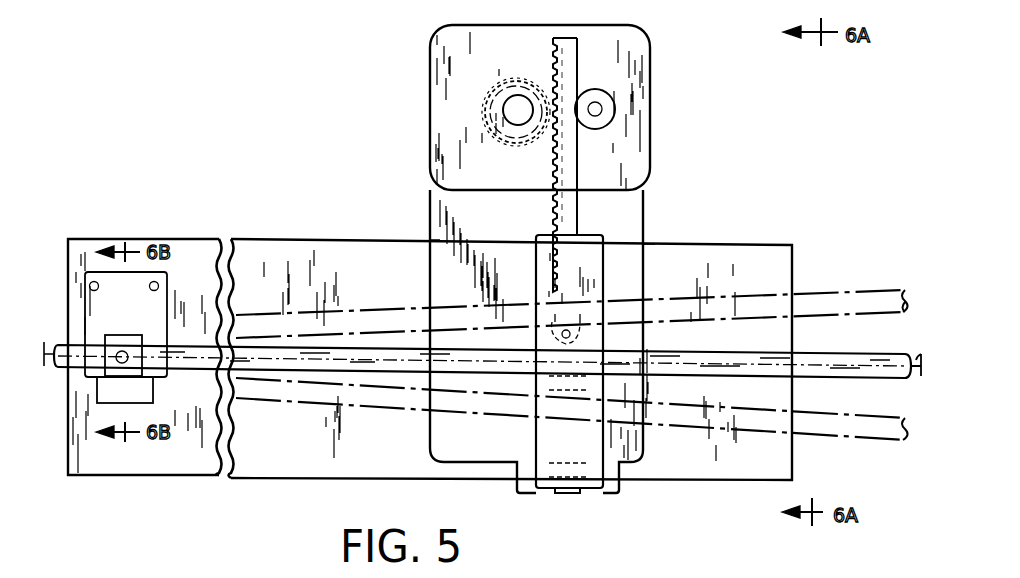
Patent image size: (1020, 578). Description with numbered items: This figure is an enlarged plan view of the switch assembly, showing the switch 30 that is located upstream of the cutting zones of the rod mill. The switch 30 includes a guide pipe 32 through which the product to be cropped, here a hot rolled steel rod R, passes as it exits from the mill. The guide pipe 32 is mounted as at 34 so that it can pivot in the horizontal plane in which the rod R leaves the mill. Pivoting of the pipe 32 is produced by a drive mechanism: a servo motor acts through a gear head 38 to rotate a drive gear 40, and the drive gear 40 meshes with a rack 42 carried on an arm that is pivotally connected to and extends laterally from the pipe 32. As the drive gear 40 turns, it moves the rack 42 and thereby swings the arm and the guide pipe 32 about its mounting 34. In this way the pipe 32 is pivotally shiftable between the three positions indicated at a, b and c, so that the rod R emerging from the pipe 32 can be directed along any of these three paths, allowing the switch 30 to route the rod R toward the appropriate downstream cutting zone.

The switch 30 is at (338, 126).
The guide pipe 32 is at (575, 386).
The pivotal mounting 34 is at (170, 290).
The gear head 38 is at (648, 49).
The drive gear 40 is at (496, 84).
The rack 42 is at (553, 153).
The hot rolled steel rod R is at (44, 352).
The first pipe position a is at (858, 290).
The second pipe position b is at (826, 361).
The third pipe position c is at (812, 425).